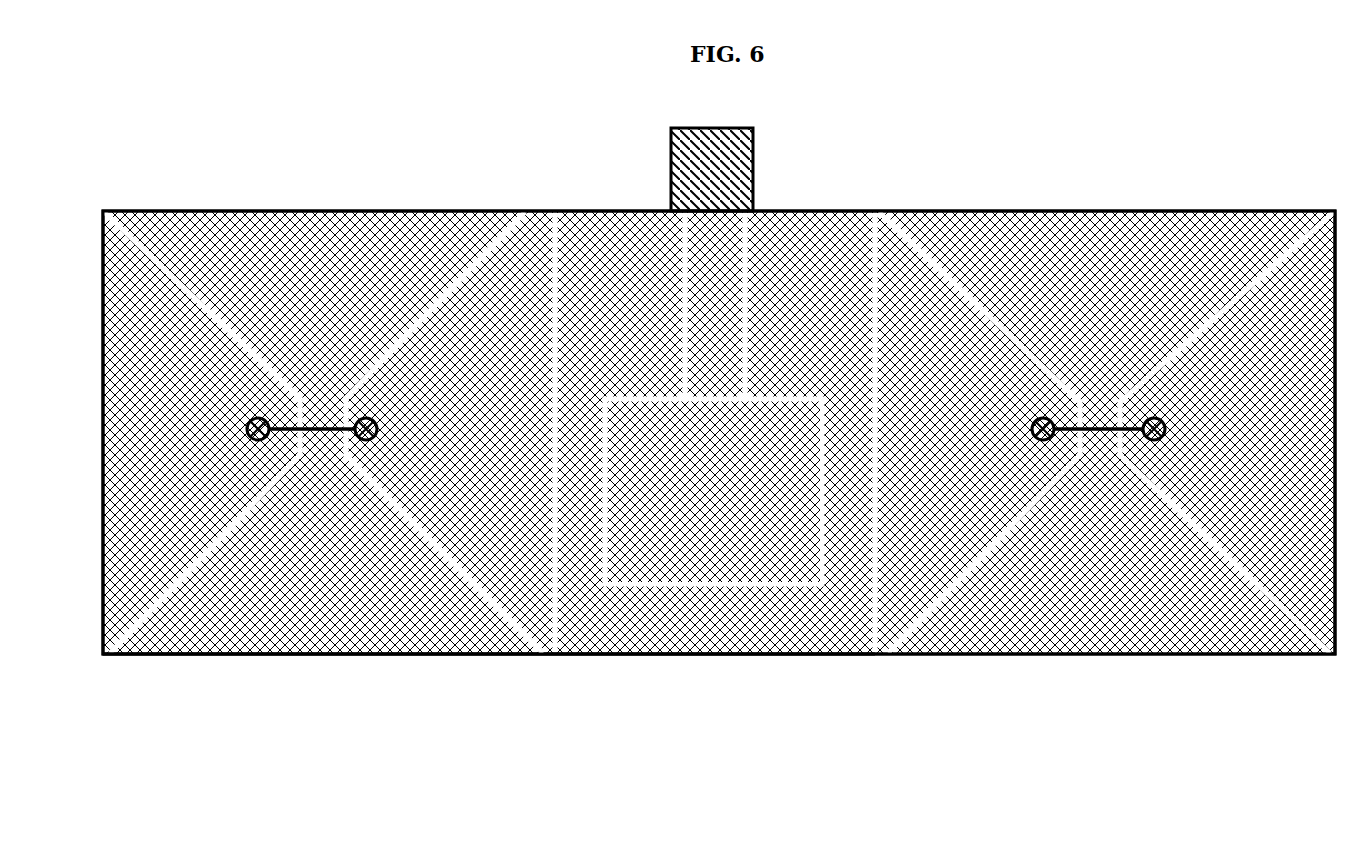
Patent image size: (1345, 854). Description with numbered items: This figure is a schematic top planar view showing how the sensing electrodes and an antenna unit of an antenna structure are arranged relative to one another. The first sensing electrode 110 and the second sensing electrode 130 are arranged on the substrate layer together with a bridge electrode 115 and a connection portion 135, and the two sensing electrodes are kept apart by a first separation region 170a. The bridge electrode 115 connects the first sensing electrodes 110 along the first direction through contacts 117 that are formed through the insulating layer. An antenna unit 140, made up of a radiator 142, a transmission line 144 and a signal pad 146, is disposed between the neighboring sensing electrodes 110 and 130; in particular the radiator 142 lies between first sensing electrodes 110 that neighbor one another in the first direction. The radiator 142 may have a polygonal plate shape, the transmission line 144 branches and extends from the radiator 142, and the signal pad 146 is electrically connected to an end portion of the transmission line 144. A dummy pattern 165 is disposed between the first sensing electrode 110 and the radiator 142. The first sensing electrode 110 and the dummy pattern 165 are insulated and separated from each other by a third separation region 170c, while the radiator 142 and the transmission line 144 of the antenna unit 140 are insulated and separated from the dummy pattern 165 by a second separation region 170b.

The first sensing electrode 110 is at (137, 608).
The bridge electrode 115 is at (316, 420).
The contact 117 is at (378, 405).
The second sensing electrode 130 is at (342, 643).
The connection portion 135 is at (420, 580).
The antenna unit 140 is at (794, 334).
The radiator 142 is at (807, 413).
The transmission line 144 is at (722, 265).
The signal pad 146 is at (732, 182).
The dummy pattern 165 is at (712, 625).
The first separation region 170a is at (148, 252).
The second separation region 170b is at (652, 397).
The third separation region 170c is at (873, 568).